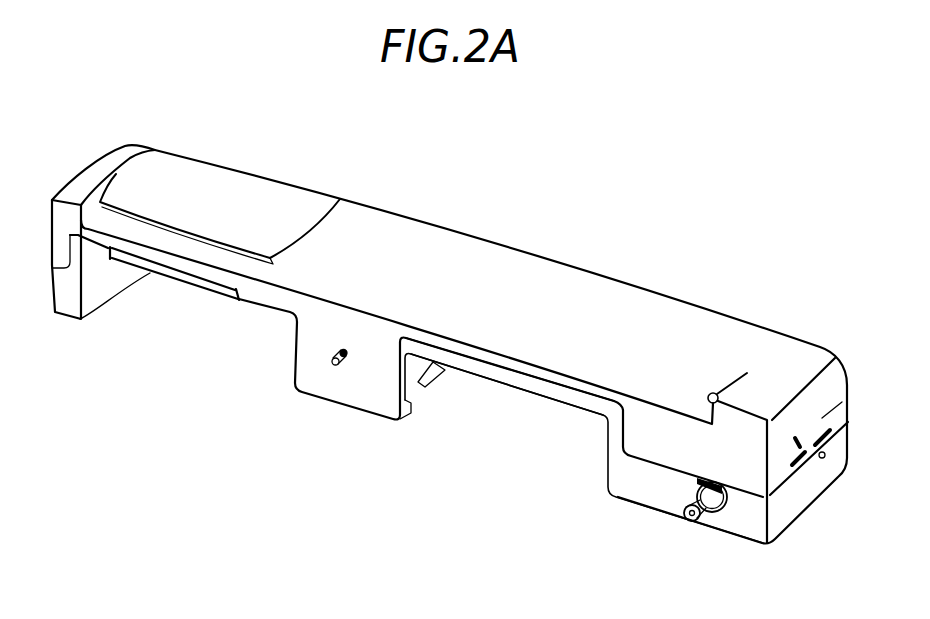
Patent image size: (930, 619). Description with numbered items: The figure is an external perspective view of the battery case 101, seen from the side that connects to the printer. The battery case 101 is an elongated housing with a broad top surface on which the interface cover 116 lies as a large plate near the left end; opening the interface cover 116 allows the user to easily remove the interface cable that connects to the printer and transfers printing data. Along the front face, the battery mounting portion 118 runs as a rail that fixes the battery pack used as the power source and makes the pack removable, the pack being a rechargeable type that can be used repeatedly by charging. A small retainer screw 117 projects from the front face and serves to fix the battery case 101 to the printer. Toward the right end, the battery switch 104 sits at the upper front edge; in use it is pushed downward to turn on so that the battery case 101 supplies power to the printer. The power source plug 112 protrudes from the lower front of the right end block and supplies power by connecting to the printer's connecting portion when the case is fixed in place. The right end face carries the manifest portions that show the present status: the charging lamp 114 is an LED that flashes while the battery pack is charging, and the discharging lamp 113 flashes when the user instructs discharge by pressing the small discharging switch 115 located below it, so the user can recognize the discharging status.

The battery case 101 is at (751, 322).
The battery switch 104 is at (713, 393).
The power source plug 112 is at (716, 517).
The discharging lamp 113 is at (845, 400).
The charging lamp 114 is at (797, 437).
The discharging switch 115 is at (824, 458).
The interface cover 116 is at (218, 177).
The retainer screw 117 is at (341, 366).
The battery mounting portion 118 is at (493, 395).